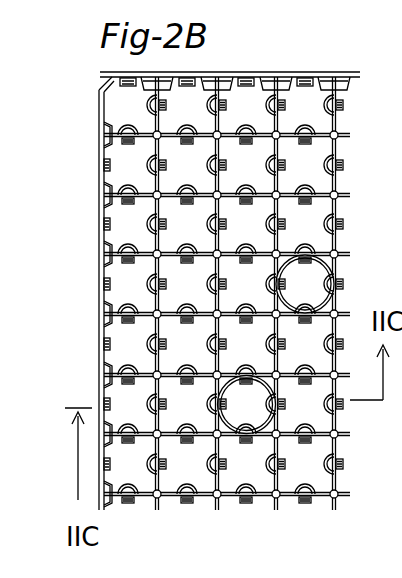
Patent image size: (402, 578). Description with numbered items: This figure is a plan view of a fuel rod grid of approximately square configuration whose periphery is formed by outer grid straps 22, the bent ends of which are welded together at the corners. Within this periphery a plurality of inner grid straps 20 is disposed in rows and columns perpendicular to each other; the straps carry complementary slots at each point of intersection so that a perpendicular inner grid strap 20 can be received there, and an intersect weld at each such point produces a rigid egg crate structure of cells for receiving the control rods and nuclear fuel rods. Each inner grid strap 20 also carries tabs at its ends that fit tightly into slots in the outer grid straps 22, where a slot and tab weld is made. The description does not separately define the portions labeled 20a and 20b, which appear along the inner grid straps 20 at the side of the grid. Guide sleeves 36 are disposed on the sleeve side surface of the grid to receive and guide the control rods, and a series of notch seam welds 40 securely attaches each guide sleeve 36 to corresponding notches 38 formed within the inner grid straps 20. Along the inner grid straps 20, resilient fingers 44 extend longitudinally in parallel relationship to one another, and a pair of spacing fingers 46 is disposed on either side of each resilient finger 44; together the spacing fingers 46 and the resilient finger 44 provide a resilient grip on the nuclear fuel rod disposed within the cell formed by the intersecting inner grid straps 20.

The inner grid strap 20 is at (352, 258).
The wall tab 20a is at (100, 315).
The wall clip 20b is at (338, 170).
The outer grid strap 22 is at (213, 74).
The guide sleeve 36 is at (320, 254).
The notch 38 is at (298, 250).
The notch seam weld 40 is at (238, 374).
The resilient finger 44 is at (312, 75).
The spacing finger 46 is at (332, 96).